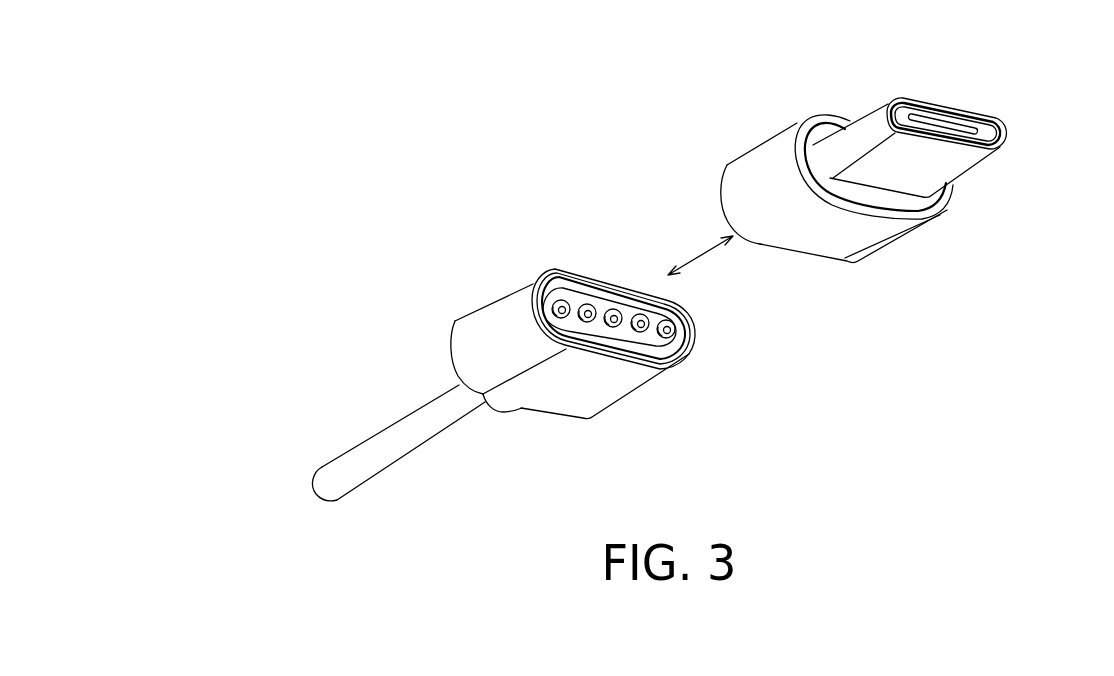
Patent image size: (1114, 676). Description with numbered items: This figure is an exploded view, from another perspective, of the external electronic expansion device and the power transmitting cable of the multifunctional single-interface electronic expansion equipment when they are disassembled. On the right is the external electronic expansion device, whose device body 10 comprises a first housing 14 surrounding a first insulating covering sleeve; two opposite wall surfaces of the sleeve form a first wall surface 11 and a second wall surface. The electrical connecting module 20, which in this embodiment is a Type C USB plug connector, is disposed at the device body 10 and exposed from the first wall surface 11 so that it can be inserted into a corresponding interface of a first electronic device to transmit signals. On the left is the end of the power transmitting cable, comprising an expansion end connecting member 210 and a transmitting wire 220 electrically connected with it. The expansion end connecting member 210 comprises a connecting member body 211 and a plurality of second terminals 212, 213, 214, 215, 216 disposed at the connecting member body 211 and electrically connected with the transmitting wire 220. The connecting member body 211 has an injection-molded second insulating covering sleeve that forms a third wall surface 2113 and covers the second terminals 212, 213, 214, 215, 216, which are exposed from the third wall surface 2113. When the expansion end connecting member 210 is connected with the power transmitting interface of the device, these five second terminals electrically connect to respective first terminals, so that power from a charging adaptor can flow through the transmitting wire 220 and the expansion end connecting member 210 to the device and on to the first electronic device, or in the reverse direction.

The device body 10 is at (902, 177).
The first wall surface 11 is at (893, 199).
The first housing 14 is at (762, 146).
The electrical connecting module 20 is at (942, 101).
The expansion end connecting member 210 is at (482, 321).
The connecting member body 211 is at (568, 392).
The third wall surface 2113 is at (628, 306).
The second terminal 212 is at (670, 333).
The second terminal 213 is at (645, 327).
The second terminal 214 is at (615, 322).
The second terminal 215 is at (590, 311).
The second terminal 216 is at (565, 307).
The transmitting wire 220 is at (388, 452).